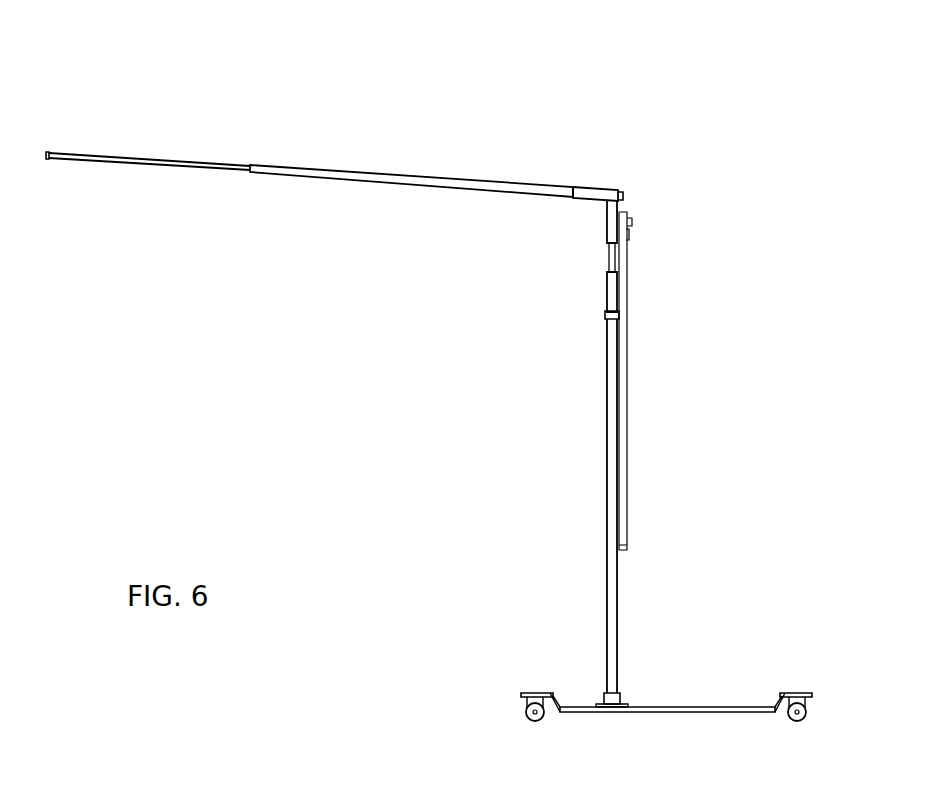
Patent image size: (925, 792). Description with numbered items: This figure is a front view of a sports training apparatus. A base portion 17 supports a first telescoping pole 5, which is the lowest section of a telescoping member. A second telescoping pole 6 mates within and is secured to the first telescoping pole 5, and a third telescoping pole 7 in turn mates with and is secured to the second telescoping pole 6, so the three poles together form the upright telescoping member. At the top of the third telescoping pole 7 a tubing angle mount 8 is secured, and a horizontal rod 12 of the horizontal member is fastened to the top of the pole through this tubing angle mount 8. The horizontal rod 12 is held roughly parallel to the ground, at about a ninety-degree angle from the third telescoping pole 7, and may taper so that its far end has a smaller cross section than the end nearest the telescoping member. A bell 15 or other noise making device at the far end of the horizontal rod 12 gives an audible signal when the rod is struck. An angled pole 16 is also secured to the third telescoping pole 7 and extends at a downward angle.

The first telescoping pole 5 is at (606, 496).
The second telescoping pole 6 is at (613, 293).
The third telescoping pole 7 is at (612, 258).
The tubing angle mount 8 is at (597, 190).
The horizontal rod 12 is at (352, 172).
The bell 15 is at (47, 163).
The angled pole 16 is at (622, 384).
The base portion 17 is at (668, 706).